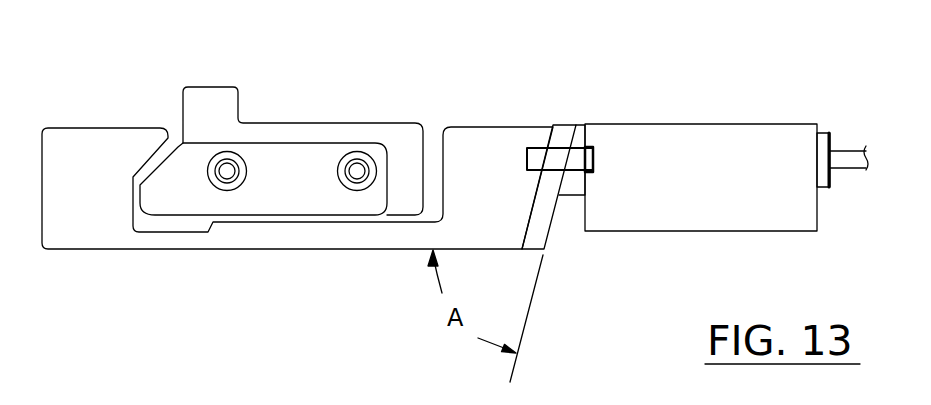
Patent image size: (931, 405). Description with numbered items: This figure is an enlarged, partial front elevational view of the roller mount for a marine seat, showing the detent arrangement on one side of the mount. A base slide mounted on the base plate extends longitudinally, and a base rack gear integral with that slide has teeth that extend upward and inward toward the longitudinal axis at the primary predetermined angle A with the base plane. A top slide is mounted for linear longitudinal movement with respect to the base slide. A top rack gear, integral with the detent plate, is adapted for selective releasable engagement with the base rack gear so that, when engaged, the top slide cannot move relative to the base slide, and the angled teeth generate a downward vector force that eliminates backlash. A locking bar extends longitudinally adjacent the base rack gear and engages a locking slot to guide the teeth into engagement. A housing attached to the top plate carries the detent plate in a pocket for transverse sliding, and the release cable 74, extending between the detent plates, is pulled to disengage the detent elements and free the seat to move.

The release cable 74 is at (850, 147).